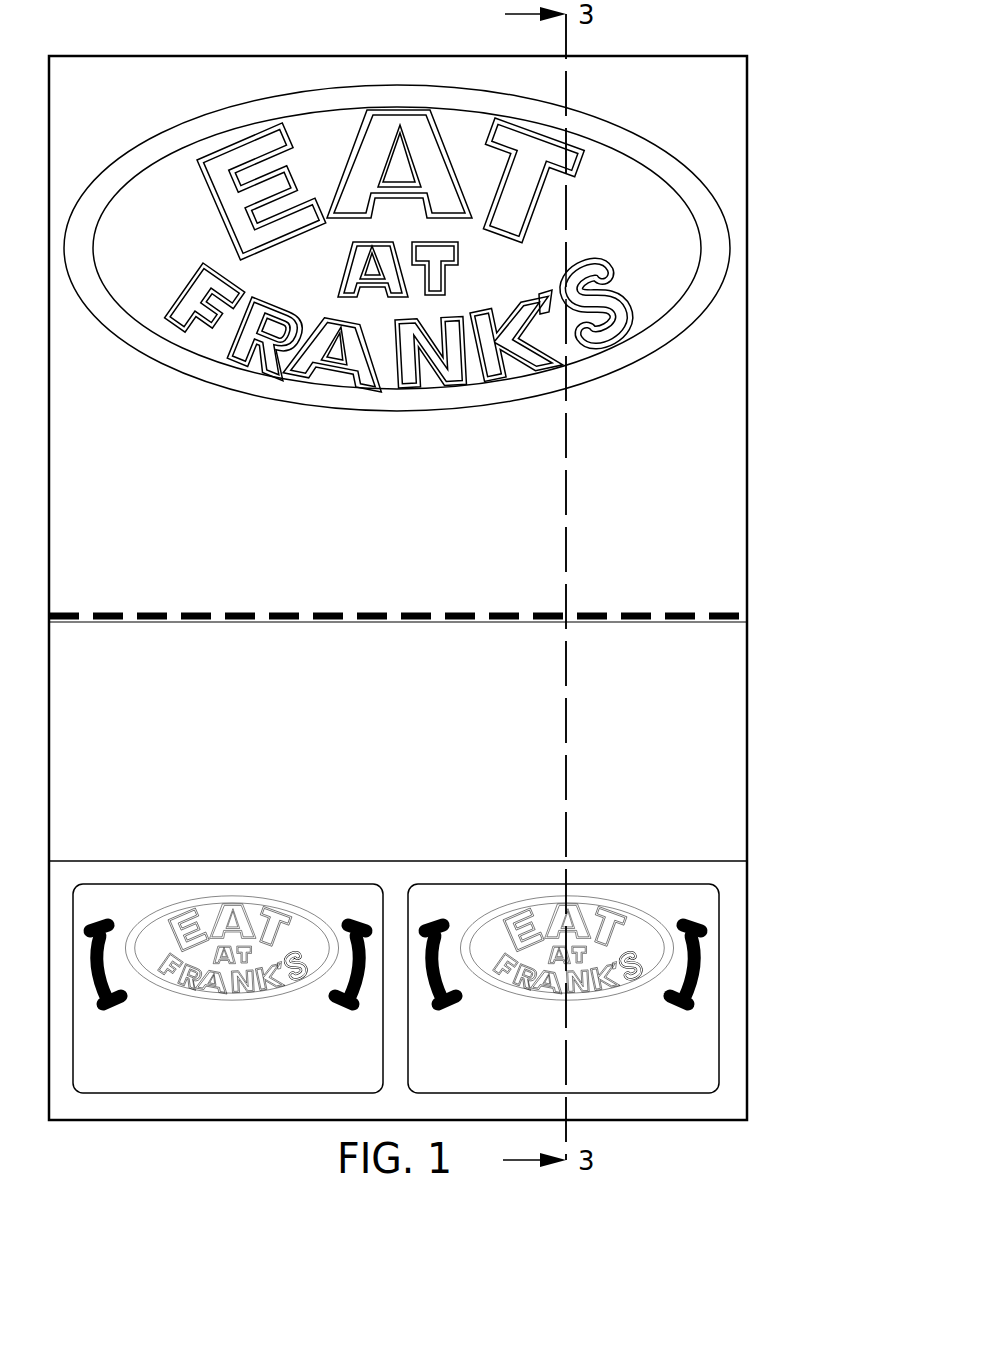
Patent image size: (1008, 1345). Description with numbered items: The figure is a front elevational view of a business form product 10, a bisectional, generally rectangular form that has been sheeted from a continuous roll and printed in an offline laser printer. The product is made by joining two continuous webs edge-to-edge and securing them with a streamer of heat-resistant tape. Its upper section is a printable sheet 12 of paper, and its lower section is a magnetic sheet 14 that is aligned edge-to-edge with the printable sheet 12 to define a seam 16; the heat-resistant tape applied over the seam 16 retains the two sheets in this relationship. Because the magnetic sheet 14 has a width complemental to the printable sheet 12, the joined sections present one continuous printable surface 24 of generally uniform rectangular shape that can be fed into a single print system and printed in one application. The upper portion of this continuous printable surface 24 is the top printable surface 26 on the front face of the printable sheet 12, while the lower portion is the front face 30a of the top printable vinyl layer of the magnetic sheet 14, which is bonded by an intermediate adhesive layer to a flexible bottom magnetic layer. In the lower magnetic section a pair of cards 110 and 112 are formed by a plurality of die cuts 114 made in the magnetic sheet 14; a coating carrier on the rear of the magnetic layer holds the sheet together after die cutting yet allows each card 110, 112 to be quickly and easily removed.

The business form product 10 is at (260, 1134).
The printable sheet 12 is at (758, 740).
The magnetic sheet 14 is at (432, 1018).
The seam 16 is at (712, 860).
The continuous printable surface 24 is at (406, 855).
The top printable surface 26 is at (658, 761).
The front face 30a is at (689, 882).
The card 110 is at (105, 1072).
The card 112 is at (706, 990).
The die cuts 114 is at (172, 1093).